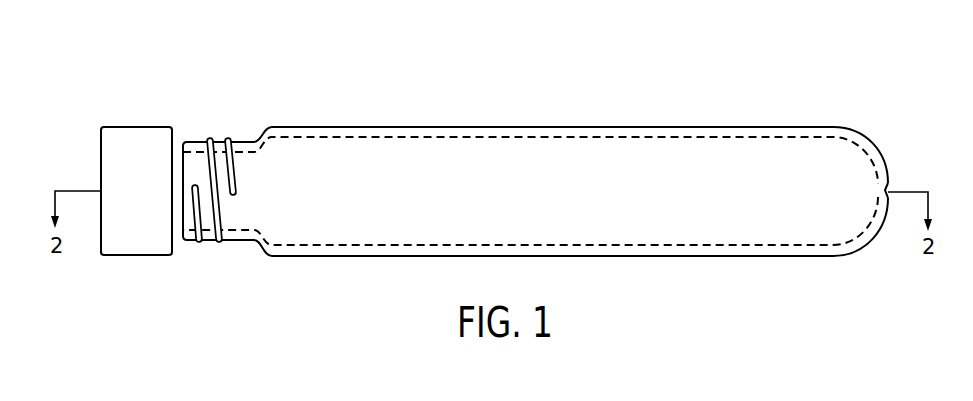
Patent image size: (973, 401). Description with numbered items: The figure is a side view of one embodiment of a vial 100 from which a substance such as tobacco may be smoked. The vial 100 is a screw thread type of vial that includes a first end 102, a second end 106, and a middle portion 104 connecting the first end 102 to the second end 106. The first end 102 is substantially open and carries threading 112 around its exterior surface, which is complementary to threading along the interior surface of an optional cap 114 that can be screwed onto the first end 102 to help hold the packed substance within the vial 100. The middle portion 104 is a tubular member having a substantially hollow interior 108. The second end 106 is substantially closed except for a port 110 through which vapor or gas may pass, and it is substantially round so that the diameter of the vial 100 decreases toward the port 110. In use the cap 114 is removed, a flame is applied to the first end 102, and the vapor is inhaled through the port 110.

The vial 100 is at (777, 32).
The first end 102 is at (180, 125).
The middle portion 104 is at (533, 113).
The second end 106 is at (882, 137).
The hollow interior 108 is at (664, 167).
The port 110 is at (899, 179).
The threading 112 is at (232, 137).
The cap 114 is at (137, 112).